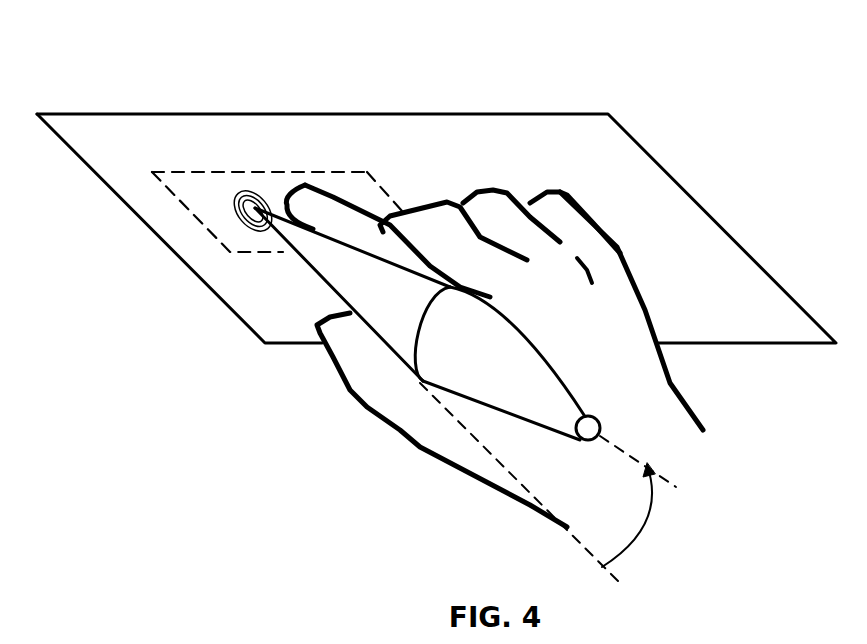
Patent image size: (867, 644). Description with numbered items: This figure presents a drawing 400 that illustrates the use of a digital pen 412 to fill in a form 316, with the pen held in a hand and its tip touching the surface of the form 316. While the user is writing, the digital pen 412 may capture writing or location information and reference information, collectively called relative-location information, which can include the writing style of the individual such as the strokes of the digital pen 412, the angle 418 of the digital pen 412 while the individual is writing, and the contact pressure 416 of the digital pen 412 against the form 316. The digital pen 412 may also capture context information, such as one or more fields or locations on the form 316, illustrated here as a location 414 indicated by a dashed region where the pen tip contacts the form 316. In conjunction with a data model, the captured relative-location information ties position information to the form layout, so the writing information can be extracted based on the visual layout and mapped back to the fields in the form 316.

The drawing 400 is at (608, 50).
The form 316 is at (318, 137).
The location 414 is at (353, 182).
The contact pressure 416 is at (243, 215).
The digital pen 412 is at (348, 267).
The angle 418 is at (645, 527).